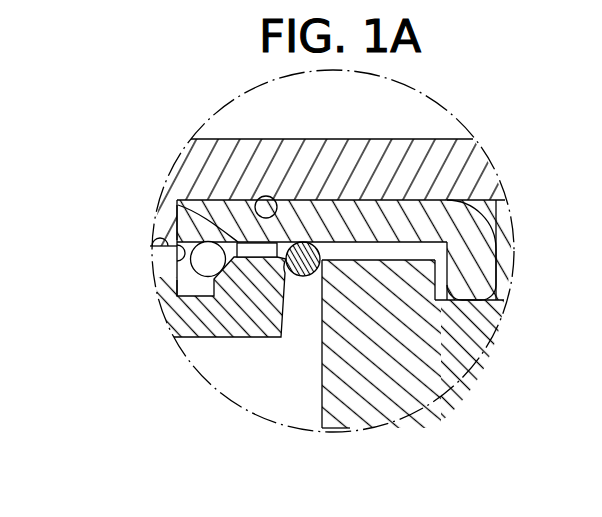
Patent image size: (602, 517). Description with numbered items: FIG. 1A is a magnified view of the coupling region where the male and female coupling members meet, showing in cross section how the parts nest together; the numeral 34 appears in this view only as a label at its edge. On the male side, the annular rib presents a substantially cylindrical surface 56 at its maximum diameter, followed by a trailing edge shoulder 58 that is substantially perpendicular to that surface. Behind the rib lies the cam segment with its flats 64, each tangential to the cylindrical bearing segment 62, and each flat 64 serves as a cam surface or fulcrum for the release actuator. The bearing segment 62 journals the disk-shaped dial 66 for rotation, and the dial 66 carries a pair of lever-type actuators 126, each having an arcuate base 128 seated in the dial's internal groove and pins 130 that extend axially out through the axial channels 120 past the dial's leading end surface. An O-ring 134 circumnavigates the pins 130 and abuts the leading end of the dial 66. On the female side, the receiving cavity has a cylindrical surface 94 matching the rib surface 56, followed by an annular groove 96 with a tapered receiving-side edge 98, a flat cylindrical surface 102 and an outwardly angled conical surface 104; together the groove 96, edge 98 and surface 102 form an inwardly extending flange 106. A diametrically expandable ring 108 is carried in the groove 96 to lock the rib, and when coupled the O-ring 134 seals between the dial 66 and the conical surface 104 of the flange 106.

The sensor assembly 34 is at (182, 0).
The cylindrical surface 56 is at (172, 254).
The trailing edge shoulder 58 is at (197, 268).
The cylindrical bearing segment 62 is at (326, 137).
The flat 64 is at (277, 200).
The dial 66 is at (421, 393).
The cylindrical surface 94 is at (152, 246).
The annular groove 96 is at (178, 290).
The tapered receiving-side edge 98 is at (180, 318).
The flat cylindrical surface 102 is at (170, 235).
The outwardly angled conical surface 104 is at (268, 336).
The inwardly extending flange 106 is at (233, 318).
The diametrically expandable ring 108 is at (241, 242).
The axial channel 120 is at (409, 262).
The lever-type actuator 126 is at (372, 260).
The arcuate base 128 is at (472, 254).
The pin 130 is at (384, 222).
The O-ring 134 is at (305, 277).